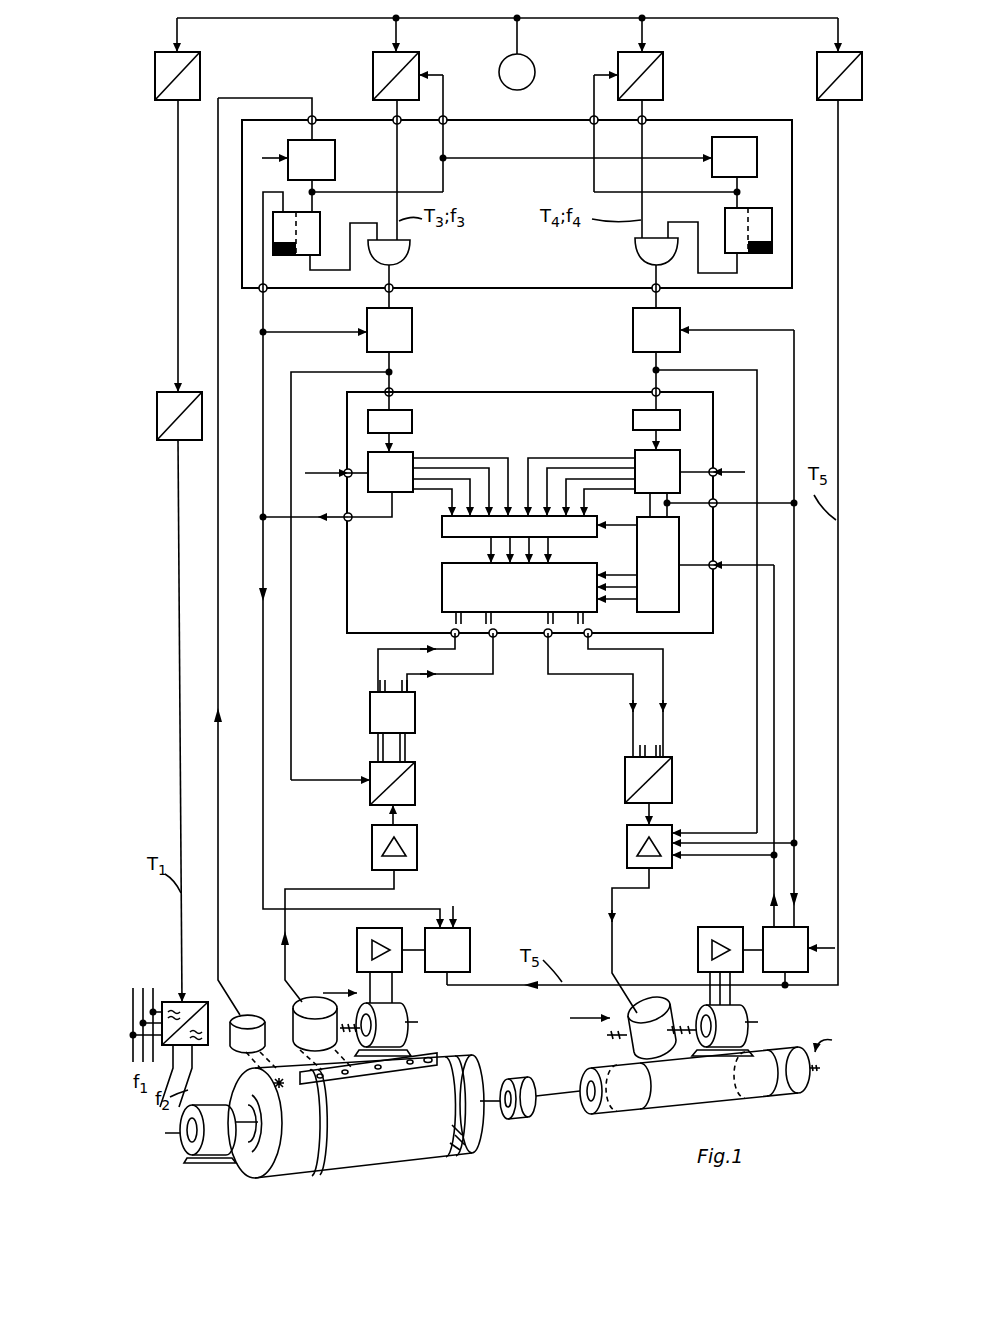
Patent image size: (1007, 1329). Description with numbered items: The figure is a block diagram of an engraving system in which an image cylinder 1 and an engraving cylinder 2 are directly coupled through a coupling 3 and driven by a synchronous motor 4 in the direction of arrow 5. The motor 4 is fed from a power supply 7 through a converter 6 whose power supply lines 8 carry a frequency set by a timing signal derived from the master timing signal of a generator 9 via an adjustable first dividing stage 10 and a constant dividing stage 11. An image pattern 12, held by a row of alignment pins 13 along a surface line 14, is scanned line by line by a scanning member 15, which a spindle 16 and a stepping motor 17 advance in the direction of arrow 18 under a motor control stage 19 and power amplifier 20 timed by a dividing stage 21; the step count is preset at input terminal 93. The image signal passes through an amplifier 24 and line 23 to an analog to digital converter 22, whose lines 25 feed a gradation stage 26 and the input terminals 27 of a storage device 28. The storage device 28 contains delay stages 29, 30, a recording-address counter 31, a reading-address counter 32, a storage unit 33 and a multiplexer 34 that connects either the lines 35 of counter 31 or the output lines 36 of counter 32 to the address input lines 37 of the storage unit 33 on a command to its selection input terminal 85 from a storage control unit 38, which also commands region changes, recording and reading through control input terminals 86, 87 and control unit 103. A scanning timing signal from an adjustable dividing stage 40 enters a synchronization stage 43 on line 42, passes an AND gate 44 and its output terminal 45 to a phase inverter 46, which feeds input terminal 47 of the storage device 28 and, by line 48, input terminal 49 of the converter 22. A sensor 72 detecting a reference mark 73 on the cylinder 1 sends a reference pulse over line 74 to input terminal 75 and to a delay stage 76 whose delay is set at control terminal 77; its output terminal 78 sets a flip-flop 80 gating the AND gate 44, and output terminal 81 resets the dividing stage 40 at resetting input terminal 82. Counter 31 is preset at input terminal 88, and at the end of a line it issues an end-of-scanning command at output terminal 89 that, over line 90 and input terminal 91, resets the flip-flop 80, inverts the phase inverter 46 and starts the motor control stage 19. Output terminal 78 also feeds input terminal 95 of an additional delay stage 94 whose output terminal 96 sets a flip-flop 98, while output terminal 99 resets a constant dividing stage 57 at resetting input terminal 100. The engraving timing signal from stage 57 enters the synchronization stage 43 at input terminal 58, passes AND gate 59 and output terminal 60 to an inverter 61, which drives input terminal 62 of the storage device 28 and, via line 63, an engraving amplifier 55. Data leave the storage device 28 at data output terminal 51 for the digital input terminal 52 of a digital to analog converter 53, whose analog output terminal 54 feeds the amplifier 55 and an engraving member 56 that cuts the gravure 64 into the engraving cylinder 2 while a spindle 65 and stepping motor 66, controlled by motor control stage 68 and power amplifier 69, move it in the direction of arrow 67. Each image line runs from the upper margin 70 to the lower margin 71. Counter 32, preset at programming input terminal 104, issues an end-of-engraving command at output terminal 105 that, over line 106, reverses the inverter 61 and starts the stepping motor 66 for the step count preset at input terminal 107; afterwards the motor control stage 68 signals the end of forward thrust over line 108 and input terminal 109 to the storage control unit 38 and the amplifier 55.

The image cylinder 1 is at (465, 1128).
The engraving cylinder 2 is at (784, 1082).
The coupling 3 is at (534, 1104).
The synchronous motor 4 is at (215, 1160).
The arrow 5 is at (842, 1080).
The converter 6 is at (200, 1001).
The three-phase mains supply 7 is at (146, 990).
The power supply lines 8 is at (196, 1062).
The generator 9 is at (533, 62).
The first dividing stage 10 is at (200, 72).
The dividing stage 11 is at (183, 388).
The image pattern 12 is at (418, 1152).
The alignment pins 13 is at (424, 1058).
The surface line 14 is at (452, 1058).
The scanning member 15 is at (308, 1006).
The spindle 16 is at (350, 1030).
The stepping motor 17 is at (402, 1024).
The arrow 18 is at (328, 990).
The motor control stage 19 is at (456, 952).
The power amplifier 20 is at (357, 948).
The dividing stage 21 is at (817, 72).
The analog to digital converter 22 is at (418, 776).
The line 23 is at (404, 812).
The amplifier 24 is at (370, 840).
The lines 25 is at (410, 750).
The gradation stage 26 is at (398, 716).
The input terminals 27 is at (456, 640).
The storage device 28 is at (350, 598).
The delay stage 29 is at (412, 422).
The delay stage 30 is at (634, 418).
The recording-address counter 31 is at (395, 463).
The reading-address counter 32 is at (668, 462).
The storage unit 33 is at (458, 590).
The multiplexer 34 is at (456, 526).
The lines 35 is at (420, 467).
The output lines 36 is at (632, 470).
The address input lines 37 is at (486, 548).
The storage control unit 38 is at (672, 580).
The dividing stage 40 is at (405, 60).
The line 42 is at (392, 118).
The synchronization stage 43 is at (504, 272).
The AND gate 44 is at (411, 251).
The output terminal 45 is at (395, 288).
The phase inverter 46 is at (412, 332).
The input terminal 47 is at (395, 392).
The line 48 is at (292, 422).
The input terminal 49 is at (365, 778).
The data output terminal 51 is at (550, 640).
The digital input terminal 52 is at (660, 752).
The digital to analog converter 53 is at (674, 782).
The analog output terminal 54 is at (644, 816).
The engraving amplifier 55 is at (627, 845).
The engraving member 56 is at (640, 1040).
The dividing stage 57 is at (665, 62).
The junction 58 is at (648, 120).
The AND gate 59 is at (634, 249).
The output terminal 60 is at (650, 288).
The inverter 61 is at (633, 336).
The input terminal 62 is at (650, 392).
The line 63 is at (695, 370).
The gravure 64 is at (670, 1090).
The spindle 65 is at (686, 1028).
The stepping motor 66 is at (749, 1022).
The arrow 67 is at (578, 1016).
The motor control stage 68 is at (784, 944).
The power amplifier 69 is at (714, 934).
The upper margin 70 is at (310, 1078).
The lower margin 71 is at (320, 1168).
The sensor 72 is at (246, 1016).
The reference mark 73 is at (281, 1087).
The signal line 74 is at (222, 660).
The junction 75 is at (314, 115).
The delay stage 76 is at (325, 158).
The control terminal 77 is at (284, 156).
The output terminal 78 is at (322, 192).
The flip-flop 80 is at (322, 234).
The output terminal 81 is at (447, 118).
The resetting input terminal 82 is at (432, 76).
The selection input terminal 85 is at (603, 522).
The control input terminal 86 is at (600, 574).
The control input terminal 87 is at (604, 585).
The input terminal 88 is at (345, 468).
The output terminal 89 is at (345, 513).
The line 90 is at (260, 440).
The input terminal 91 is at (268, 294).
The input terminal 93 is at (457, 918).
The time delay stage 94 is at (740, 160).
The input terminal 95 is at (706, 156).
The output terminal 96 is at (742, 191).
The flip-flop 98 is at (727, 234).
The output terminal 99 is at (590, 117).
The resetting input terminal 100 is at (612, 72).
The control unit 103 is at (600, 602).
The programming input terminal 104 is at (716, 466).
The output terminal 105 is at (716, 508).
The line 106 is at (794, 448).
The input terminal 107 is at (812, 940).
The line 108 is at (757, 700).
The input terminal 109 is at (716, 572).